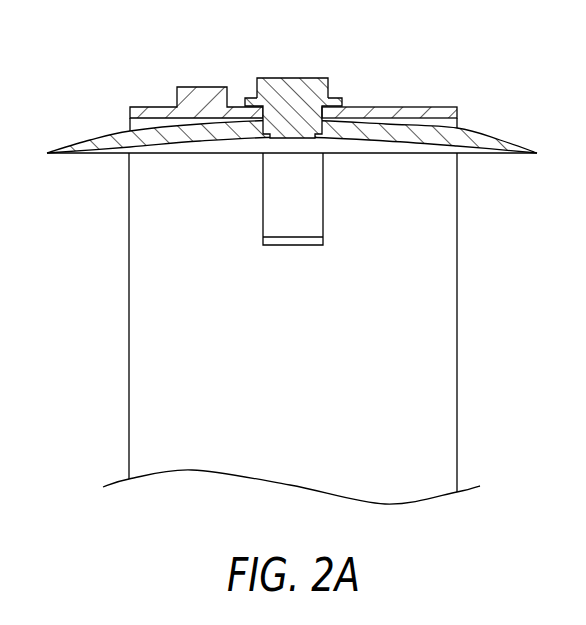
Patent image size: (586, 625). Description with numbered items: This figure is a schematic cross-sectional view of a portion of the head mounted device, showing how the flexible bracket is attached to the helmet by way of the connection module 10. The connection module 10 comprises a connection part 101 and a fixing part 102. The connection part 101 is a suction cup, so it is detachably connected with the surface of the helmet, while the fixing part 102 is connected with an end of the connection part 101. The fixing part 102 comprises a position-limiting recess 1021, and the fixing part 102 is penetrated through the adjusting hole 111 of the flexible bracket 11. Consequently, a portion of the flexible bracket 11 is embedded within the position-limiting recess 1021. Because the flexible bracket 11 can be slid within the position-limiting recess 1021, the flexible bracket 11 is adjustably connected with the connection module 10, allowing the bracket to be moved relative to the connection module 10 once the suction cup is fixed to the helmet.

The connection module 10 is at (299, 77).
The connection part 101 is at (86, 150).
The fixing part 102 is at (324, 82).
The position-limiting recess 1021 is at (291, 112).
The flexible bracket 11 is at (144, 108).
The adjusting hole 111 is at (331, 100).